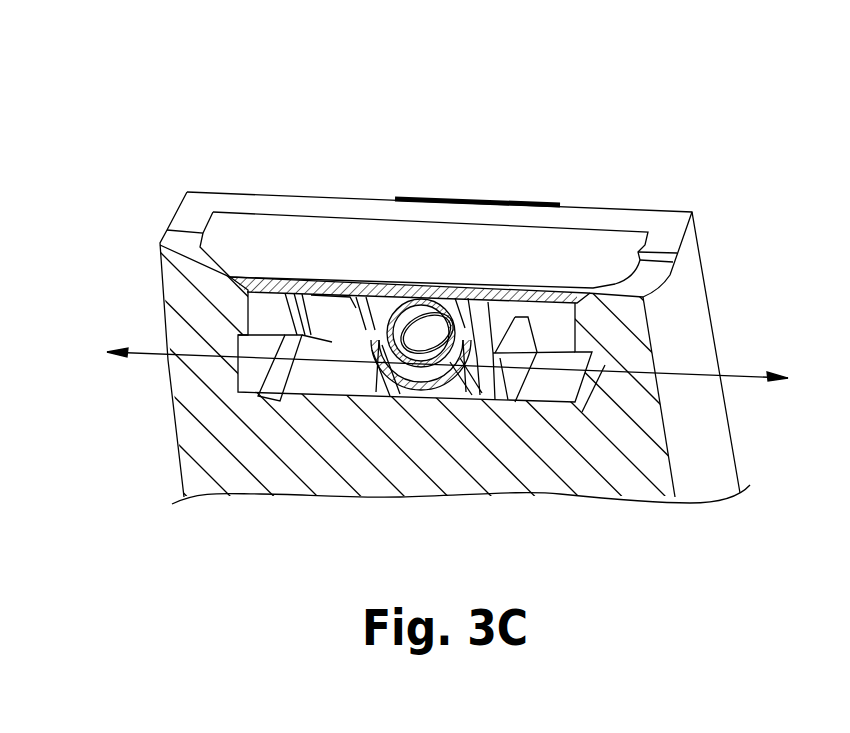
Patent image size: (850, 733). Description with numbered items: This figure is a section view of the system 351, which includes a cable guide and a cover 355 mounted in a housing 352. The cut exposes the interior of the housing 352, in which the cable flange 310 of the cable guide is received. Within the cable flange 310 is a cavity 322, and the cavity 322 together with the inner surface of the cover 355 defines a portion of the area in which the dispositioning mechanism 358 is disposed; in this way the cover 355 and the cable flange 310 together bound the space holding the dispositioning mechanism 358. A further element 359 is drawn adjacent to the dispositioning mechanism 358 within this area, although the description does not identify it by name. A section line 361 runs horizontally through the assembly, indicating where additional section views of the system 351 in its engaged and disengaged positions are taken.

The system 351 is at (172, 112).
The housing 352 is at (268, 193).
The cover 355 is at (527, 210).
The dispositioning mechanism 358 is at (447, 305).
The spring 359 is at (403, 300).
The cable flange 310 is at (452, 398).
The cavity 322 is at (420, 373).
The section line 361 is at (466, 372).